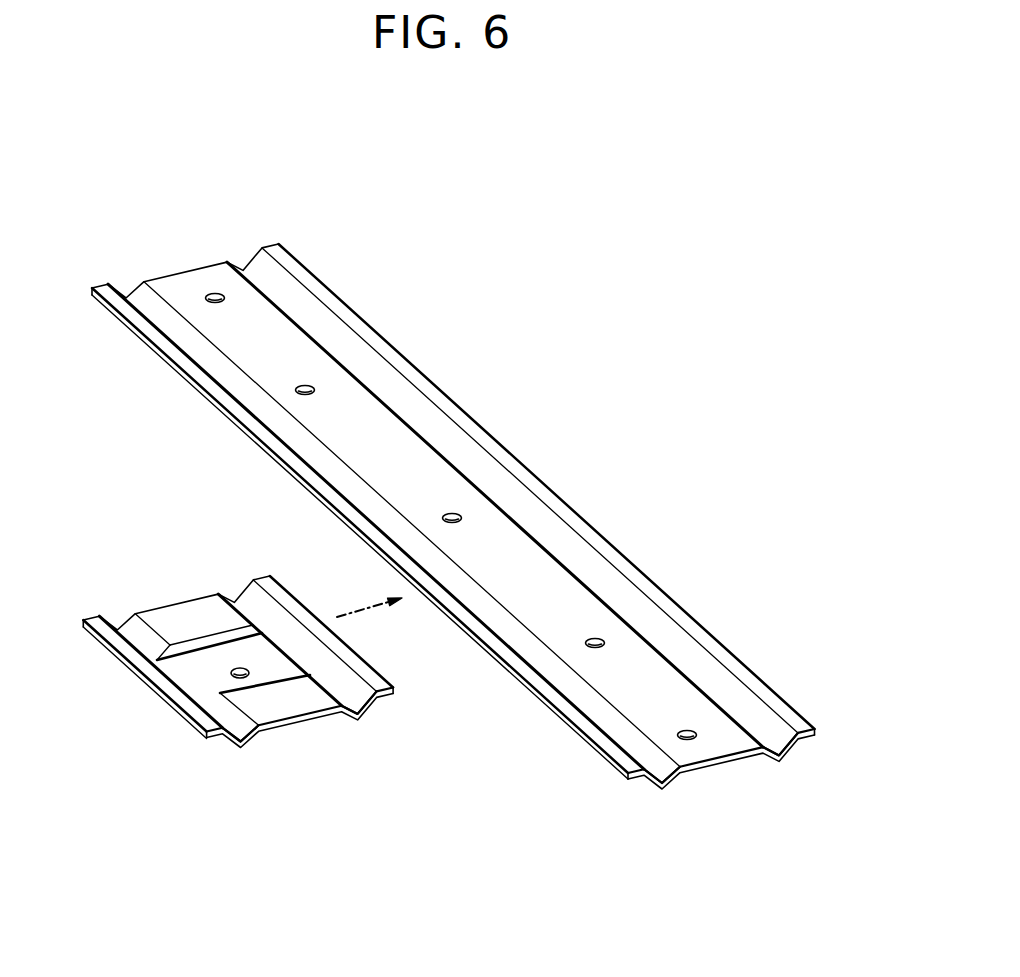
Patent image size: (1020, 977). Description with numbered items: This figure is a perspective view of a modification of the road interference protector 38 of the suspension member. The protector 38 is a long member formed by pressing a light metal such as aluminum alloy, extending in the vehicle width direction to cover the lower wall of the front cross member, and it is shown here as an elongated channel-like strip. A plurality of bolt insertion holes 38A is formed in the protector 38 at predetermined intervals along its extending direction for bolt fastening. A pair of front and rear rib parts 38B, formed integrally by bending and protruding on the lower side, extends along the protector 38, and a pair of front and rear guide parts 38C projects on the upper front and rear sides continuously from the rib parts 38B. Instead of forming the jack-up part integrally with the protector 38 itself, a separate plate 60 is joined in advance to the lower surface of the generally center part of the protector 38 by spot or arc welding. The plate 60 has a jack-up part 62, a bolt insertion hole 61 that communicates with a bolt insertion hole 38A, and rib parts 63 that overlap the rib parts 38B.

The road interference protector 38 is at (472, 415).
The bolt insertion hole 38A is at (216, 293).
The rib part 38B is at (660, 790).
The guide part 38C is at (234, 399).
The plate 60 is at (150, 690).
The bolt insertion hole 61 is at (250, 674).
The jack-up part 62 is at (198, 673).
The rib part 63 is at (237, 748).